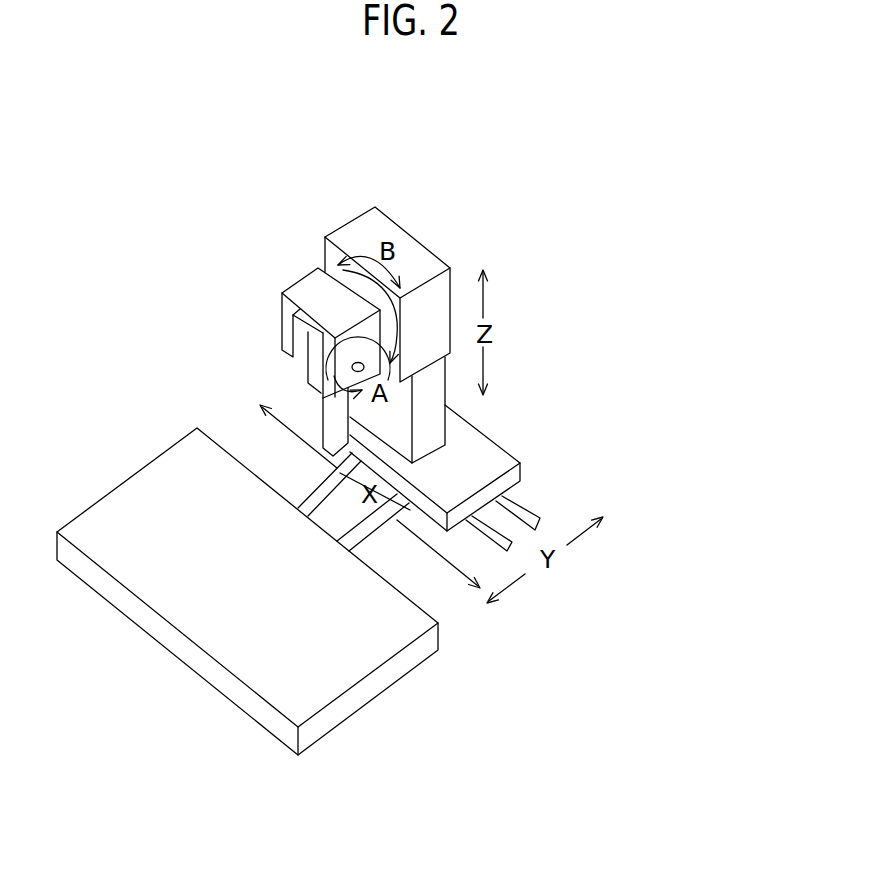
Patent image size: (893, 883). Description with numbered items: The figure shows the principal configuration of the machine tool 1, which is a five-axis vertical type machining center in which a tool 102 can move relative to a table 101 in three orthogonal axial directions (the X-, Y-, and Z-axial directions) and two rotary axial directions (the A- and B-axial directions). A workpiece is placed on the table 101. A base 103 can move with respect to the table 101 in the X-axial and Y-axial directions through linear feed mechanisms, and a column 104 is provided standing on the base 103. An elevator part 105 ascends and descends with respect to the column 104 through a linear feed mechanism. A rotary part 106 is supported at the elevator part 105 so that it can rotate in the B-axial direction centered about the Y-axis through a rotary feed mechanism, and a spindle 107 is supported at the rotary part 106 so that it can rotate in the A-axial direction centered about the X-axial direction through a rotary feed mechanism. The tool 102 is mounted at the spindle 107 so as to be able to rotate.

The machine tool 1 is at (588, 229).
The table 101 is at (390, 683).
The tool 102 is at (322, 413).
The base 103 is at (500, 457).
The column 104 is at (437, 422).
The elevator part 105 is at (420, 245).
The rotary part 106 is at (308, 277).
The spindle 107 is at (308, 377).